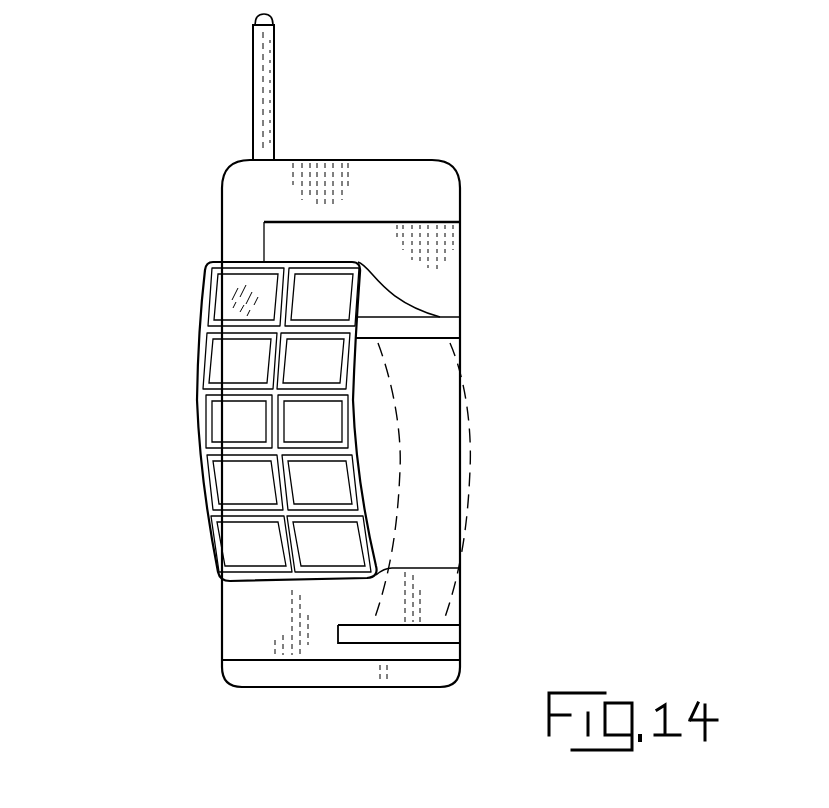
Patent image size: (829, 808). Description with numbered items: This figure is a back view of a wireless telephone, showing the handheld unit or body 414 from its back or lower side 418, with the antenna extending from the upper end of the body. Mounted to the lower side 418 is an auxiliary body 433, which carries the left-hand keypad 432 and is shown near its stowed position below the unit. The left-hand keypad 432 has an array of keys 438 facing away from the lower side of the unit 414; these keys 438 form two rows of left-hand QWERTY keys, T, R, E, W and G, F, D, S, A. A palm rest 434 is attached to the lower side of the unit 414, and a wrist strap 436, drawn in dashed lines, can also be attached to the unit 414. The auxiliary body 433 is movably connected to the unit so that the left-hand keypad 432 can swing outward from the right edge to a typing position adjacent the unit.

The handheld unit or body 414 is at (462, 198).
The back or lower side 418 is at (282, 623).
The left-hand keypad 432 is at (196, 303).
The auxiliary body 433 is at (197, 397).
The palm rest 434 is at (450, 282).
The wrist strap 436 is at (470, 475).
The keys 438 is at (198, 493).